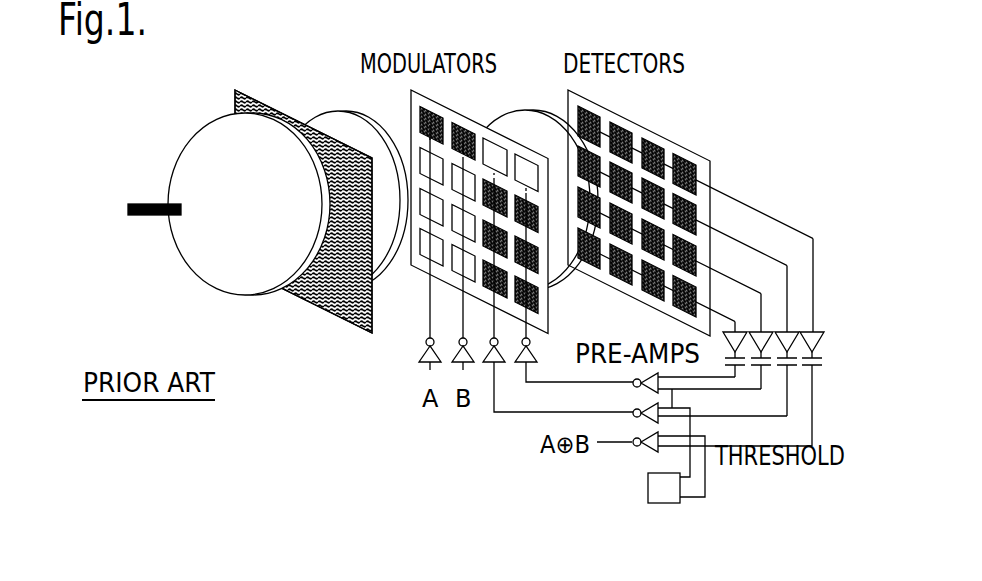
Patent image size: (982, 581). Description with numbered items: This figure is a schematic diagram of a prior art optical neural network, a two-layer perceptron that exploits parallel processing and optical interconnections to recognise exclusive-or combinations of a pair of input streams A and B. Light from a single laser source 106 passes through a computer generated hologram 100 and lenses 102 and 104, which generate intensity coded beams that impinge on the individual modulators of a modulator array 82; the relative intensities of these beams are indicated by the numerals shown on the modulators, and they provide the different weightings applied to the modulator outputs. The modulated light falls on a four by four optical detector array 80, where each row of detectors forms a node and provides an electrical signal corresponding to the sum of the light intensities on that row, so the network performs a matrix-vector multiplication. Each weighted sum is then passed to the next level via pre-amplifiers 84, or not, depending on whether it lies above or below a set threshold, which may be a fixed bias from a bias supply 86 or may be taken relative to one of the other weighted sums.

The computer generated hologram 100 is at (257, 100).
The lens 102 is at (194, 128).
The lens 104 is at (343, 117).
The single laser source 106 is at (153, 214).
The modulator array 82 is at (453, 113).
The optical detector array 80 is at (677, 140).
The pre-amplifiers 84 is at (818, 330).
The bias supply 86 is at (648, 490).